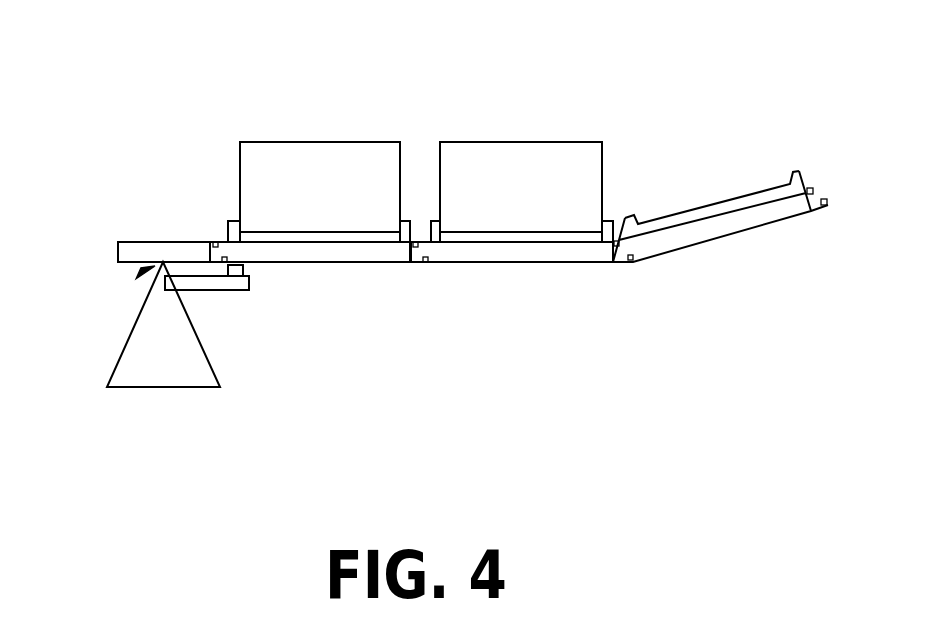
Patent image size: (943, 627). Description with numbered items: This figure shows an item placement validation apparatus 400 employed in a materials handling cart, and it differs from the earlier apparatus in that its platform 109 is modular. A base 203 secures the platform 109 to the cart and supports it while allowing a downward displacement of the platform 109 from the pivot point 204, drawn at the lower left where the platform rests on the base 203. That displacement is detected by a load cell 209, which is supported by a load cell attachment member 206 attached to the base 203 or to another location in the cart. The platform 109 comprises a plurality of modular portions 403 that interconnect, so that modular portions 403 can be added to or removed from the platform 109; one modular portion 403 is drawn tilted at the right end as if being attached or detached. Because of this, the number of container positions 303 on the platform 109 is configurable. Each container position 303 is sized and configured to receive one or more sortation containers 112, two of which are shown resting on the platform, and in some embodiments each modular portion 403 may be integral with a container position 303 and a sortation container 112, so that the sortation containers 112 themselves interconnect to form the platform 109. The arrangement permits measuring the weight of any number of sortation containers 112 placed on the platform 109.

The item placement validation apparatus 400 is at (186, 81).
The sortation container 112 is at (310, 162).
The platform 109 is at (138, 252).
The container position 303 is at (235, 237).
The modular portion 403 is at (340, 252).
The pivot point 204 is at (142, 272).
The base 203 is at (144, 322).
The load cell attachment member 206 is at (230, 282).
The load cell 209 is at (245, 273).